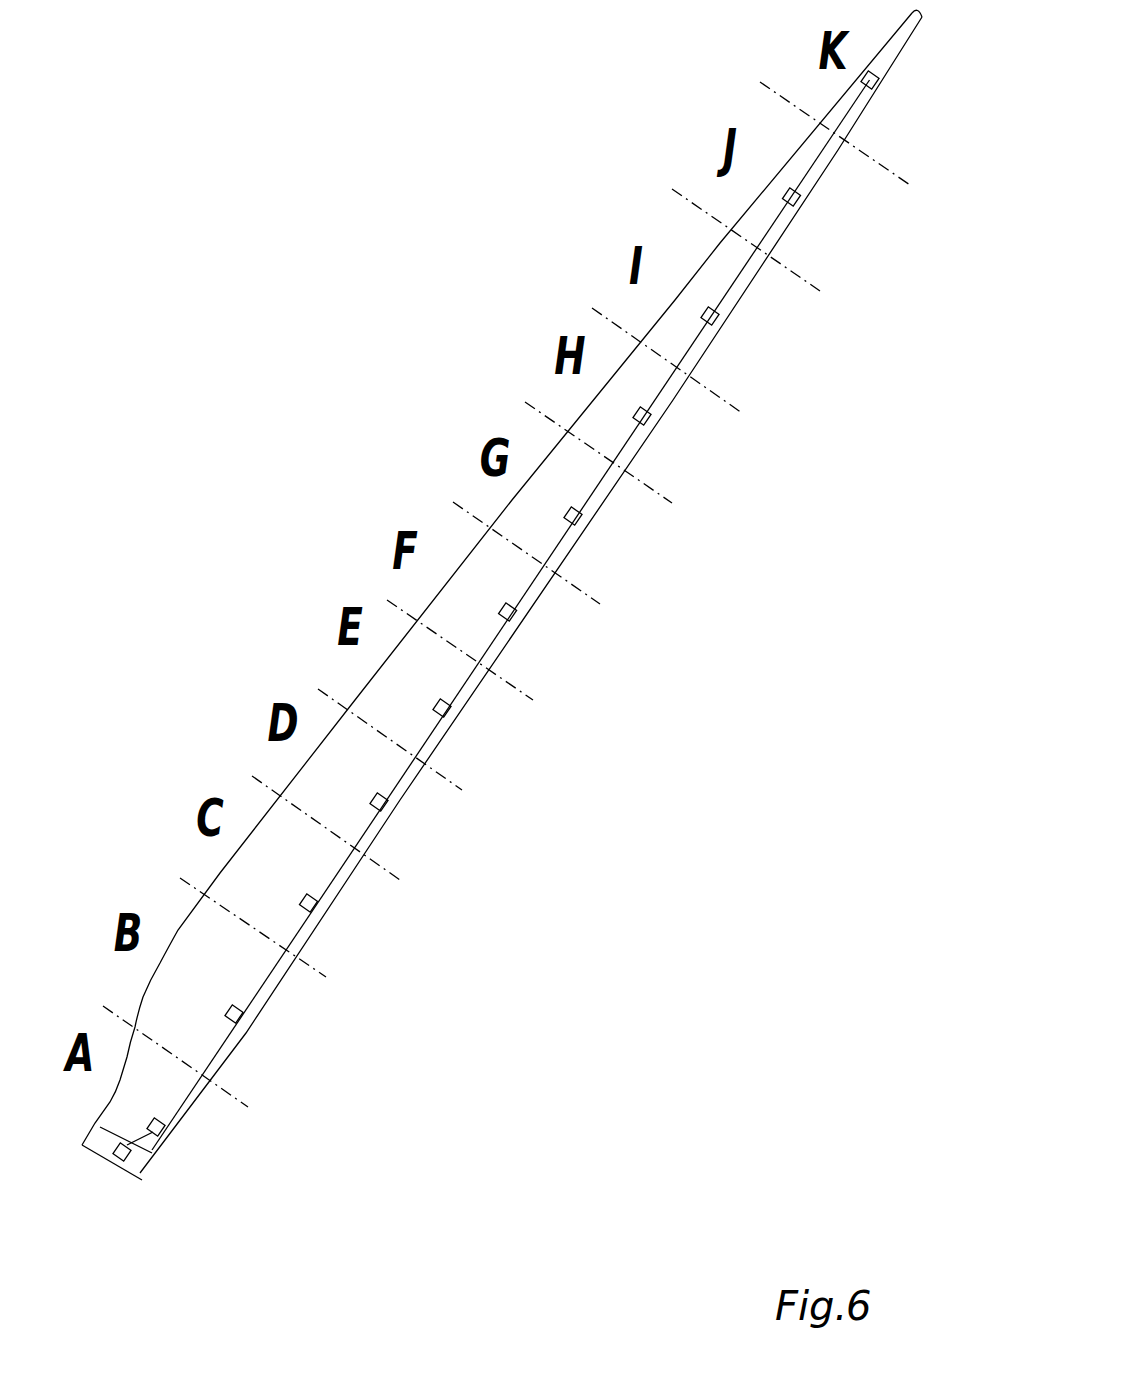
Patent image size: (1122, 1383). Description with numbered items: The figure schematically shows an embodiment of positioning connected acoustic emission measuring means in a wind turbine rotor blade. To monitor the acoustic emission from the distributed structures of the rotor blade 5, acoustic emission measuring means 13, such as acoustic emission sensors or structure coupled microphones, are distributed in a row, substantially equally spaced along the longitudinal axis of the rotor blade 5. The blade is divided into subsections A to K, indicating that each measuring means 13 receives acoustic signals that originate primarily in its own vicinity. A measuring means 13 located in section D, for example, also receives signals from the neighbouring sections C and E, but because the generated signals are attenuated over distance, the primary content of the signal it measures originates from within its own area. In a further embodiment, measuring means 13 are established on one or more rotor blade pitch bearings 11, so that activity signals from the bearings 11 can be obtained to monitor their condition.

The rotor blade 5 is at (466, 672).
The acoustic emission measuring means 13 is at (385, 815).
The rotor blade pitch bearing 11 is at (140, 1173).